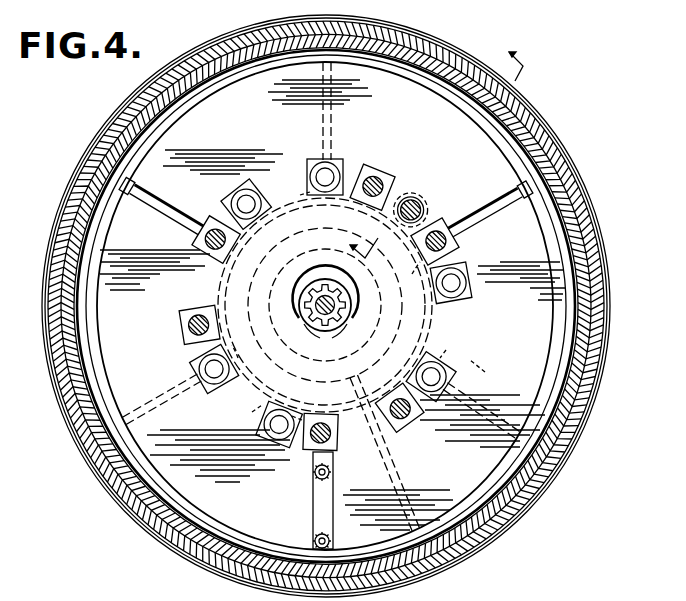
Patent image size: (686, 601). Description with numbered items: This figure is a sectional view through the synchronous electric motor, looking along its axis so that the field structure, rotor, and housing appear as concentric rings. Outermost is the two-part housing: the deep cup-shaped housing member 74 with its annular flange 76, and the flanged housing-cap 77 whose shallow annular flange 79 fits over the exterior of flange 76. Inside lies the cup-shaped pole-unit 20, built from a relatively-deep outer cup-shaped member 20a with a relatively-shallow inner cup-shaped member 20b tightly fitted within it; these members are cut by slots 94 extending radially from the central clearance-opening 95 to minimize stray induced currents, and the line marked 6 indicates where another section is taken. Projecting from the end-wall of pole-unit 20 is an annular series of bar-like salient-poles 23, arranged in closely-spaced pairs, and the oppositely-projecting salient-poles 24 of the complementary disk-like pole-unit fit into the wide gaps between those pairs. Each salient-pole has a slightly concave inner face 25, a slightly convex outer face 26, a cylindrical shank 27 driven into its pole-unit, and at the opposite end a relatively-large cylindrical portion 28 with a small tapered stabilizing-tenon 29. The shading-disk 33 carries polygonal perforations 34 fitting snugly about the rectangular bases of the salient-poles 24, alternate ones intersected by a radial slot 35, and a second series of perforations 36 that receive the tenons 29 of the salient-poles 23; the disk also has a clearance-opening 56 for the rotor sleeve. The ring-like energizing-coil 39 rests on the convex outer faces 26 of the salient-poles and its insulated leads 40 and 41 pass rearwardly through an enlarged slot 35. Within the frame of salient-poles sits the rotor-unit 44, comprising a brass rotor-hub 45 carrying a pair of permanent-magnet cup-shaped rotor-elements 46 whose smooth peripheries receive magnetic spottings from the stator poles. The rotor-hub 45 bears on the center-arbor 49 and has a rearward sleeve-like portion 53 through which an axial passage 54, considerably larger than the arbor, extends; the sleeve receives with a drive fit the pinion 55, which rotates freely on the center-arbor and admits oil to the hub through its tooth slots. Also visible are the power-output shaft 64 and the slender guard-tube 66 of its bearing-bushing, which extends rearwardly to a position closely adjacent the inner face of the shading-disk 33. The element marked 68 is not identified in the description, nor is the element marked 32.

The section line 6- 6 is at (429, 148).
The cup-shaped pole-unit 20 is at (583, 372).
The outer cup-shaped member 20a is at (597, 353).
The inner cup-shaped member 20b is at (605, 330).
The salient-poles 23 is at (268, 195).
The salient-poles 24 is at (383, 161).
The concave inner face 25 is at (415, 281).
The convex outer face 26 is at (392, 178).
The cylindrical shank 27 is at (220, 229).
The cylindrical portion 28 is at (316, 162).
The stabilizing-tenon 29 is at (256, 215).
The hidden spoke 32 is at (333, 118).
The shading-disk 33 is at (541, 470).
The polygonal perforations 34 is at (205, 245).
The radial slot 35 is at (177, 200).
The perforations 36 is at (248, 198).
The energizing-coil 39 is at (549, 185).
The insulated lead 40 is at (333, 477).
The insulated lead 41 is at (312, 541).
The rotor-unit 44 is at (440, 322).
The rotor-hub 45 is at (313, 248).
The cup-shaped rotor-elements 46 is at (222, 290).
The center-arbor 49 is at (322, 338).
The sleeve-like portion 53 is at (337, 331).
The axial passage 54 is at (346, 313).
The pinion 55 is at (332, 272).
The clearance-opening 56 is at (301, 289).
The power-output shaft 64 is at (424, 207).
The guard-tube 66 is at (428, 186).
The bolt collar 68 is at (398, 216).
The cup-shaped housing member 74 is at (606, 288).
The annular flange 76 is at (600, 261).
The housing-cap 77 is at (587, 426).
The annular flange 79 is at (576, 454).
The slots 94 is at (408, 503).
The central clearance-opening 95 is at (364, 372).